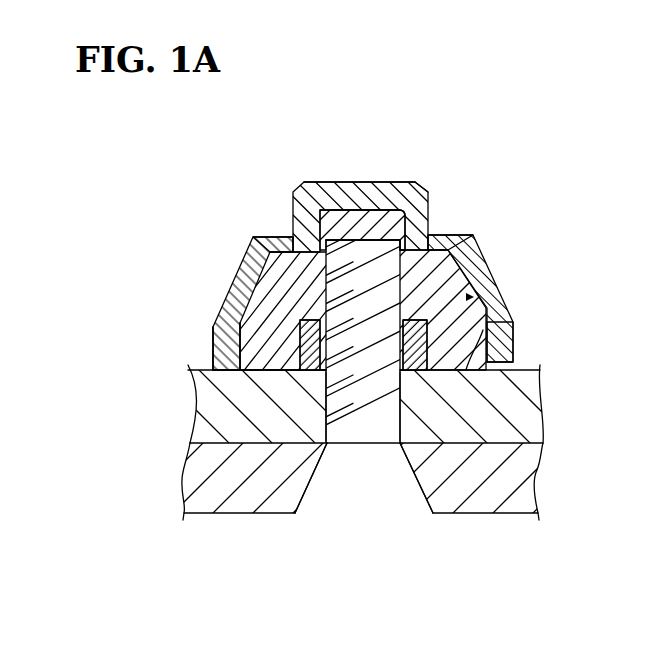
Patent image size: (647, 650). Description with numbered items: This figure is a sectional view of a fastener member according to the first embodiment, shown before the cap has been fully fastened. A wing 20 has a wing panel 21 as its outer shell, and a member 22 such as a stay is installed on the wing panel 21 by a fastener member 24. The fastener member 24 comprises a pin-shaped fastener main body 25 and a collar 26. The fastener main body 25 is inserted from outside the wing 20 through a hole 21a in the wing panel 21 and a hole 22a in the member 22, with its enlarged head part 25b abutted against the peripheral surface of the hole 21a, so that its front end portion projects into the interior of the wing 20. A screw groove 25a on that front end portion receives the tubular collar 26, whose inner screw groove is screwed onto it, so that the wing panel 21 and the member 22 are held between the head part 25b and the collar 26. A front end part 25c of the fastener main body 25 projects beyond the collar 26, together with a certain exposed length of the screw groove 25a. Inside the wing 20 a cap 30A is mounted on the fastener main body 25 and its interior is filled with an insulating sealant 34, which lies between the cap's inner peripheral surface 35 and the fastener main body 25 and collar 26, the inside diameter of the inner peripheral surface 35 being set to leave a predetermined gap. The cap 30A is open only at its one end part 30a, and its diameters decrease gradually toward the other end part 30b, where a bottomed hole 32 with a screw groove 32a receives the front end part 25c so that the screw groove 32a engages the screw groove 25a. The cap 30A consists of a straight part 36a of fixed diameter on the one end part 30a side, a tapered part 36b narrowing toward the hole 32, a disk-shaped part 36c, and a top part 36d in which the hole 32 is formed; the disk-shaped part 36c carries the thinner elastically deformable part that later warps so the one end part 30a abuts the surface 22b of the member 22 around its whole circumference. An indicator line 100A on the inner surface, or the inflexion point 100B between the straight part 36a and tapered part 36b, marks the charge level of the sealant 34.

The wing 20 is at (340, 432).
The wing panel 21 is at (183, 480).
The hole 21a is at (411, 513).
The member 22 is at (197, 420).
The hole 22a is at (388, 438).
The surface 22b is at (514, 319).
The fastener member 24 is at (351, 158).
The fastener main body 25 is at (301, 325).
The screw groove 25a is at (249, 306).
The head part 25b is at (298, 508).
The front end part 25c is at (393, 214).
The collar 26 is at (255, 370).
The cap 30A is at (511, 294).
The one end part 30a is at (514, 345).
The other end part 30b is at (357, 200).
The hole 32 is at (326, 185).
The screw groove 32a is at (414, 182).
The sealant 34 is at (295, 243).
The inner peripheral surface 35 is at (446, 211).
The straight part 36a is at (246, 364).
The tapered part 36b is at (234, 281).
The disk-shaped part 36c is at (434, 236).
The top part 36d is at (380, 208).
The indicator line 100A is at (466, 297).
The inflexion point 100B is at (246, 339).